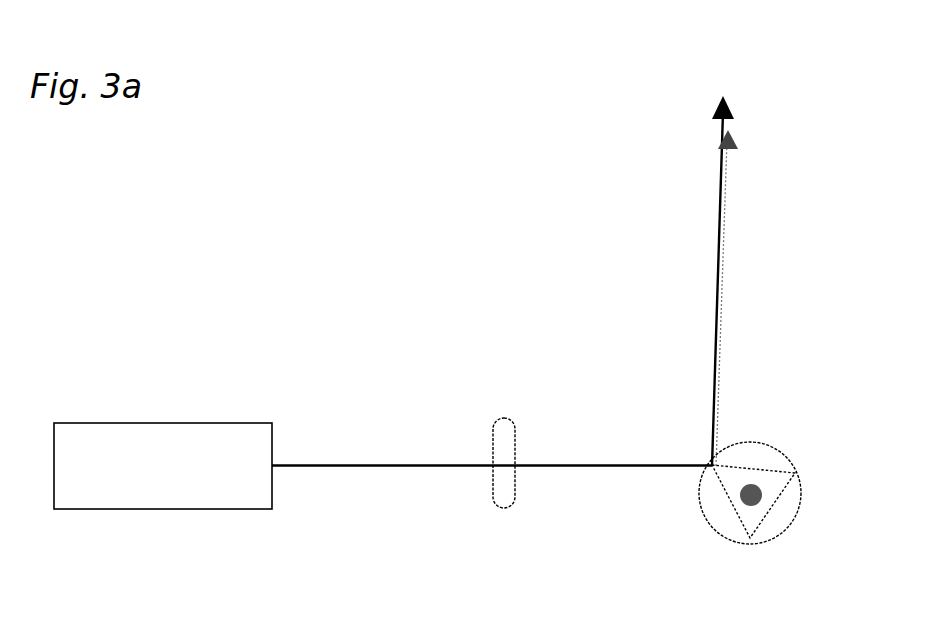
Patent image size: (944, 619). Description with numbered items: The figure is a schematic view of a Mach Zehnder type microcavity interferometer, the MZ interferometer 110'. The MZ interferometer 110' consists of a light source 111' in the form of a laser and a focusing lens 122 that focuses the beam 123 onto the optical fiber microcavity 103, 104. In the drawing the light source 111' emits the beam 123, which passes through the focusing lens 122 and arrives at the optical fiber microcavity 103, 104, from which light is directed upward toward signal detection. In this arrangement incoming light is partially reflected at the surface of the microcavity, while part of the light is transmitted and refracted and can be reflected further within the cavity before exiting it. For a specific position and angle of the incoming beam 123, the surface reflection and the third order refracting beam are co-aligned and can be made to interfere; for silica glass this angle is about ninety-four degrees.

The Mach Zehnder type microcavity interferometer 110' is at (458, 305).
The light source 111' is at (163, 493).
The focusing lens 122 is at (503, 510).
The beam 123 is at (575, 465).
The optical fiber microcavity 103 is at (815, 430).
The optical fiber microcavity 104 is at (815, 430).